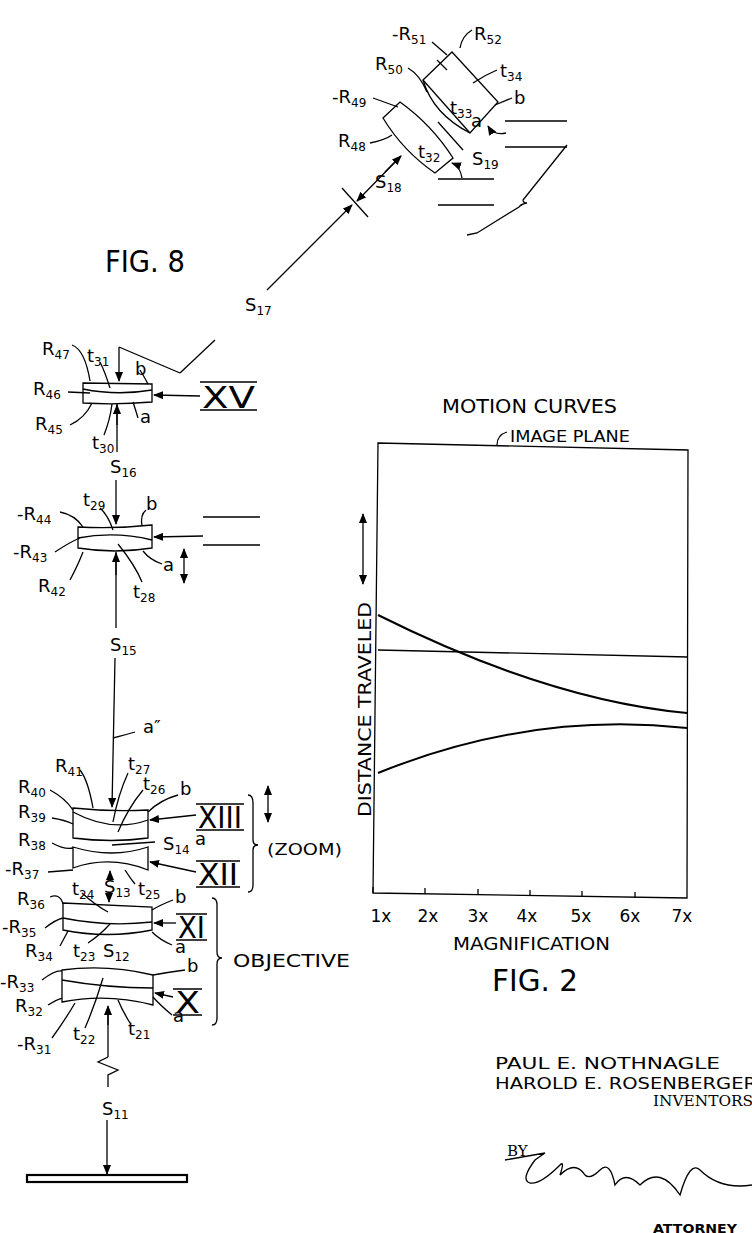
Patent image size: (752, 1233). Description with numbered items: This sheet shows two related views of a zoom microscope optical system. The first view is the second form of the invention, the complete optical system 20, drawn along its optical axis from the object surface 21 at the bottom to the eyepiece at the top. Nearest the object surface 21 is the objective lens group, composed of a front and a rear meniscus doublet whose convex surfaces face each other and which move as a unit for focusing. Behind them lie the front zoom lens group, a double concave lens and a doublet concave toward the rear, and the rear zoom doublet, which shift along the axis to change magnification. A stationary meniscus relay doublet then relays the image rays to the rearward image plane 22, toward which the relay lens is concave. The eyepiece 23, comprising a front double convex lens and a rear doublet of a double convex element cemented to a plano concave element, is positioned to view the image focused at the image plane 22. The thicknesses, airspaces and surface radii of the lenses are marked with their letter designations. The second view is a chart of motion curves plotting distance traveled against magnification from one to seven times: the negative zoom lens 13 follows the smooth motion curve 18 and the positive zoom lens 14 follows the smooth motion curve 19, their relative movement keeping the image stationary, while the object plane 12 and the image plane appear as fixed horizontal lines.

In FIG. 8, the eyepiece 23 is at (528, 143).
In FIG. 8, the image plane 22 is at (367, 218).
In FIG. 8, the optical system 20 is at (165, 636).
In FIG. 8, the object surface 21 is at (148, 1176).
In FIG. 2, the motion curve 19 is at (398, 622).
In FIG. 2, the motion curve 18 is at (425, 757).
In FIG. 2, the object plane 12 is at (475, 648).
In FIG. 2, the zoom lens 14 is at (518, 675).
In FIG. 2, the zoom lens 13 is at (452, 748).